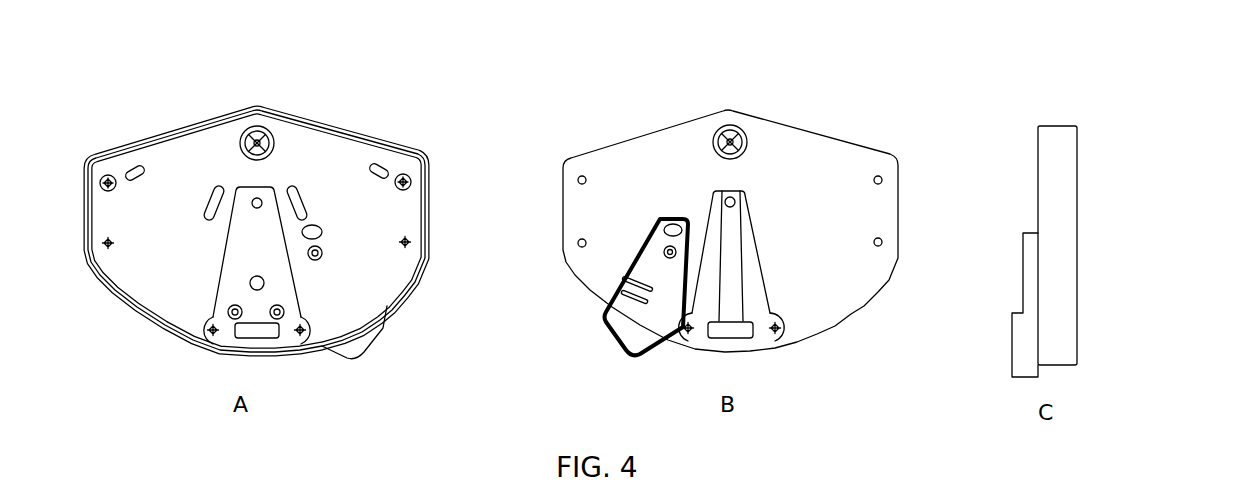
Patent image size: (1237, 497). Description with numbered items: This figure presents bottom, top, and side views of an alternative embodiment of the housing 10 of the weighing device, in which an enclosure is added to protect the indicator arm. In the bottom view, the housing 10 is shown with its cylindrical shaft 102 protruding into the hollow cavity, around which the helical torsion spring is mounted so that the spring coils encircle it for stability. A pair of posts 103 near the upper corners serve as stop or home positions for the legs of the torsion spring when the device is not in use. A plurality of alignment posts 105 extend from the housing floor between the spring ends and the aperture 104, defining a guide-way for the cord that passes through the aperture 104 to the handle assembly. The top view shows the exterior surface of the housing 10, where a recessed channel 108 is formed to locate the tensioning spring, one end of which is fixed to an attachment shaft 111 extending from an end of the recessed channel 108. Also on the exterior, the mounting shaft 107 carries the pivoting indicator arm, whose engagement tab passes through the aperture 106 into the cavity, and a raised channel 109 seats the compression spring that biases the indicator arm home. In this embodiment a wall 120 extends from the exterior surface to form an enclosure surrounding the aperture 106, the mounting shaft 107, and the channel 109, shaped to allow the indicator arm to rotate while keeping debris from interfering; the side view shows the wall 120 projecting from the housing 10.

The housing 10 is at (146, 106).
The shaft 102 is at (266, 132).
The posts 103 is at (133, 168).
The aperture 104 is at (263, 334).
The alignment posts 105 is at (264, 283).
The aperture 106 is at (319, 232).
The mounting shaft 107 is at (666, 254).
The recessed channel 108 is at (731, 258).
The raised channel 109 is at (612, 292).
The attachment shaft 111 is at (746, 190).
The wall 120 is at (606, 333).